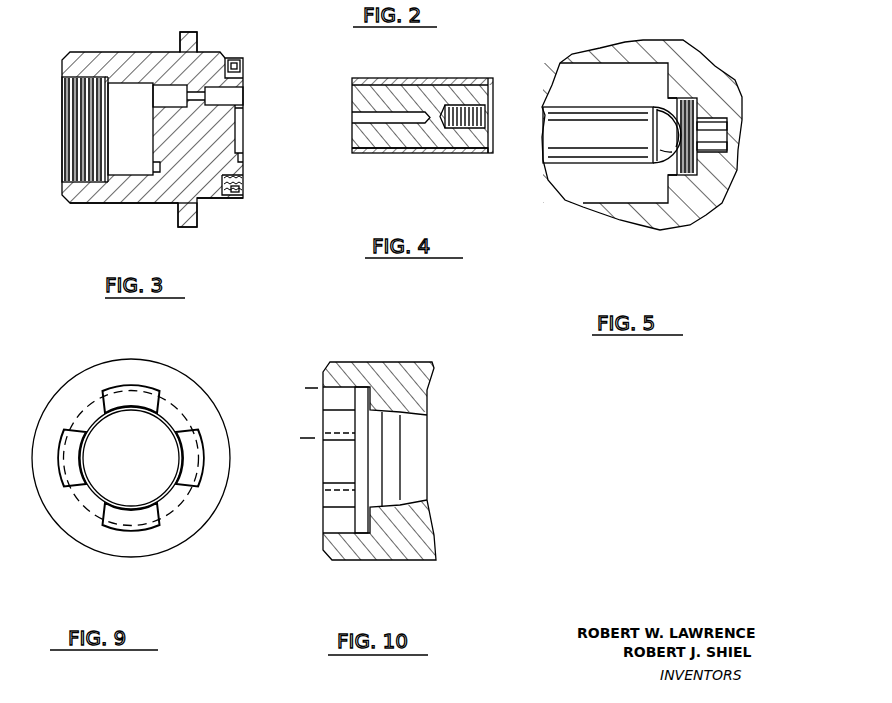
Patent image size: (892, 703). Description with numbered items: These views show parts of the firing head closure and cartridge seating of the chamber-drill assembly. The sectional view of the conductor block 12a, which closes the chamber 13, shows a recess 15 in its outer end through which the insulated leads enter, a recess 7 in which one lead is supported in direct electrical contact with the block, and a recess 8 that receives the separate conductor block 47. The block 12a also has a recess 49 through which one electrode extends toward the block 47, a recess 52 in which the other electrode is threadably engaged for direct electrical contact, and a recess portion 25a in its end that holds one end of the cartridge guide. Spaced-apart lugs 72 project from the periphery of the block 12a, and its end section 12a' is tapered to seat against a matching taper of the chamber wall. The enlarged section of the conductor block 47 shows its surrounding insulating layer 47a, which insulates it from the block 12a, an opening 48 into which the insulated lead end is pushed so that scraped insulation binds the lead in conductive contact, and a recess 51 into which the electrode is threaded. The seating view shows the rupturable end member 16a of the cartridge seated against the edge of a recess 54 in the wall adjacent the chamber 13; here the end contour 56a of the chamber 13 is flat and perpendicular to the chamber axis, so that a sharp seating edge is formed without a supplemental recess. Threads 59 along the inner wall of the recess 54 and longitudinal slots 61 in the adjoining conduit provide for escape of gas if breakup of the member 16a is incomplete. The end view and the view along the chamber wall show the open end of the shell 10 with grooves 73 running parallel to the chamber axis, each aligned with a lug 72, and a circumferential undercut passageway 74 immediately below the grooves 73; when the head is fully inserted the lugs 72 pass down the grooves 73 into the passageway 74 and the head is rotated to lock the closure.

In FIG. 3, the recess 7 is at (118, 203).
In FIG. 3, the recess 8 is at (173, 95).
In FIG. 3, the recess 15 is at (128, 93).
In FIG. 3, the recess 49 is at (228, 95).
In FIG. 3, the tapered end section 12a' is at (224, 45).
In FIG. 3, the recess portion 25a is at (243, 130).
In FIG. 3, the recess 52 is at (243, 182).
In FIG. 3, the lugs 72 is at (187, 45).
In FIG. 3, the electrical conductor block 12a is at (156, 214).
In FIG. 4, the electrical conductor block 47 is at (432, 100).
In FIG. 4, the opening 48 is at (392, 118).
In FIG. 4, the recess 51 is at (473, 152).
In FIG. 4, the insulating layer 47a is at (397, 152).
In FIG. 5, the shell 10 is at (740, 178).
In FIG. 9, the shell 10 is at (61, 391).
In FIG. 10, the shell 10 is at (432, 362).
In FIG. 5, the chamber 13 is at (583, 183).
In FIG. 10, the chamber 13 is at (415, 450).
In FIG. 5, the rupturable end member 16a is at (658, 164).
In FIG. 5, the contour 56a is at (667, 190).
In FIG. 5, the recess 54 is at (697, 108).
In FIG. 5, the threads 59 is at (688, 177).
In FIG. 5, the slots 61 is at (724, 138).
In FIG. 9, the passageway 74 is at (180, 425).
In FIG. 10, the passageway 74 is at (367, 400).
In FIG. 9, the grooves 73 is at (128, 393).
In FIG. 10, the grooves 73 is at (347, 400).